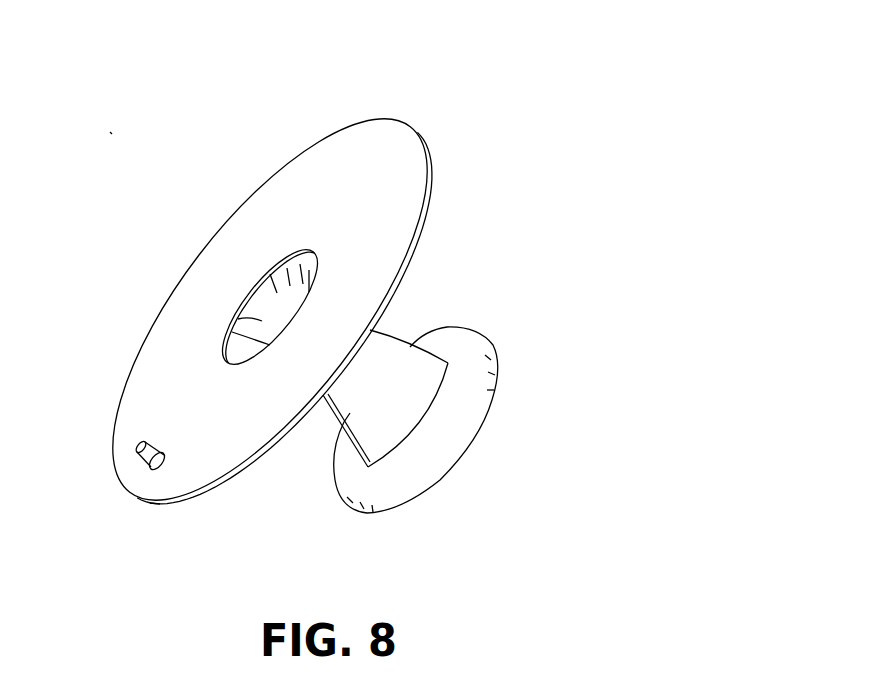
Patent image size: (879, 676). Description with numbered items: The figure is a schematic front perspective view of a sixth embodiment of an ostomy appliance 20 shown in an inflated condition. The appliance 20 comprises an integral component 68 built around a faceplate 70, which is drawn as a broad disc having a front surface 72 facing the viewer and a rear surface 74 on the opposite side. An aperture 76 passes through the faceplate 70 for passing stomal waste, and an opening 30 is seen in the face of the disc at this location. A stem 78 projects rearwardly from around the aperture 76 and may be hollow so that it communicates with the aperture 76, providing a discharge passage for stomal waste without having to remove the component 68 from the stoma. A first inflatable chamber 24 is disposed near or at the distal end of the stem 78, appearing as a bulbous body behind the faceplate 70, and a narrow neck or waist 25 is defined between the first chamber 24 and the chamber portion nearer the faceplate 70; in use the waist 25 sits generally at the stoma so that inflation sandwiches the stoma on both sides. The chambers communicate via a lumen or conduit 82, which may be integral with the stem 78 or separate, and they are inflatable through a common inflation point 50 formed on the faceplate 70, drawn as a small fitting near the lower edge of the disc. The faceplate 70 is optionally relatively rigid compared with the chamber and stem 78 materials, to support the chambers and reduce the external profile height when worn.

The ostomy appliance 20 is at (101, 120).
The integral component 68 is at (410, 115).
The front surface 72 is at (321, 155).
The faceplate 70 is at (432, 152).
The rear surface 74 is at (189, 500).
The opening 30 is at (263, 297).
The conduit 82 is at (240, 333).
The aperture 76 is at (220, 350).
The waist 25 is at (378, 353).
The stem 78 is at (322, 412).
The first inflatable chamber 24 is at (462, 427).
The common inflation point 50 is at (145, 458).